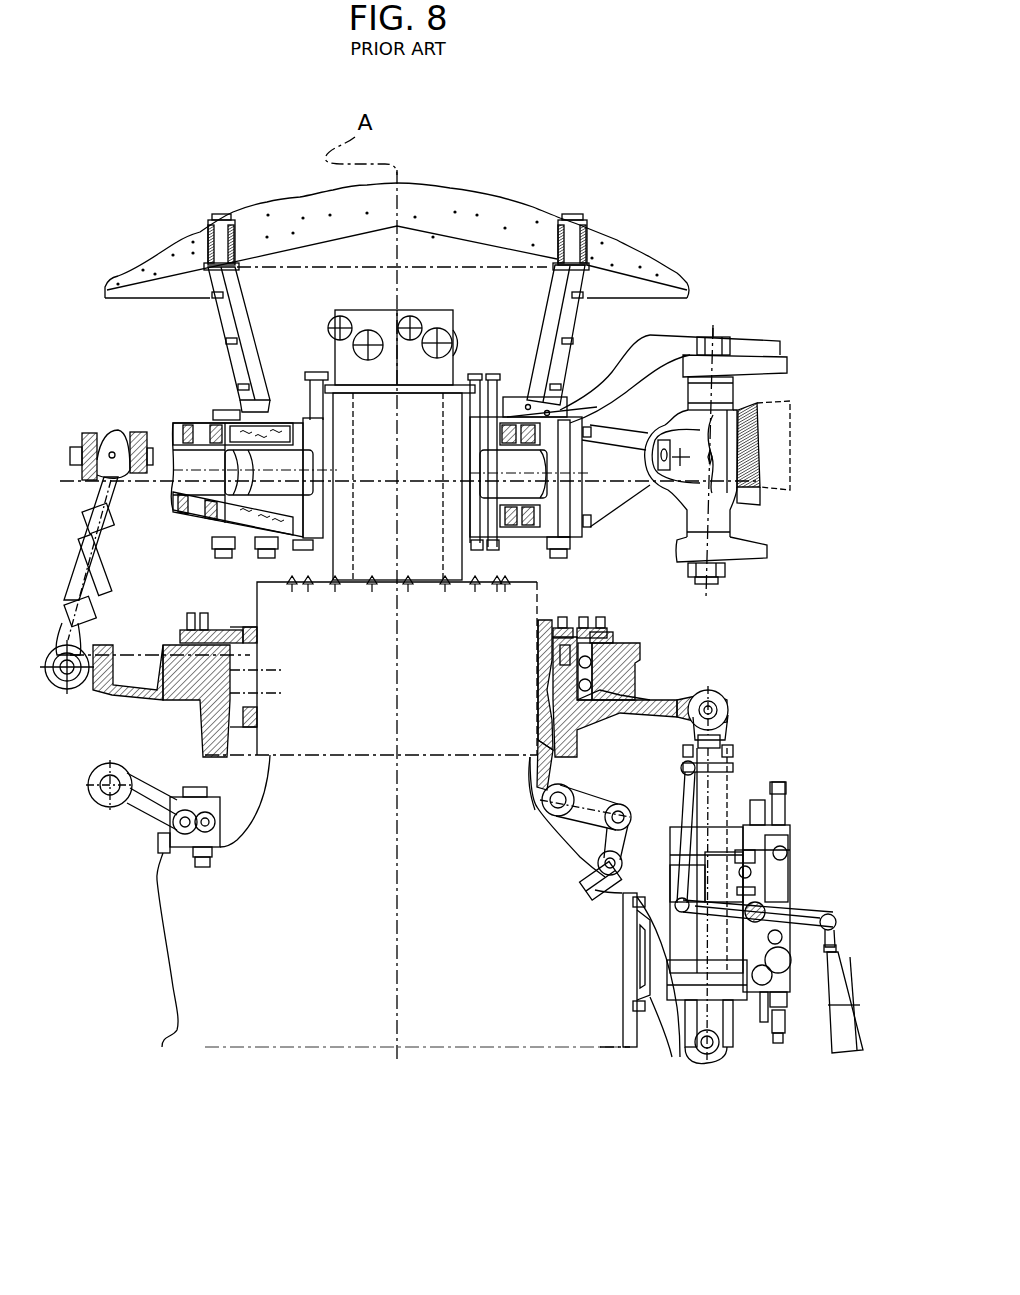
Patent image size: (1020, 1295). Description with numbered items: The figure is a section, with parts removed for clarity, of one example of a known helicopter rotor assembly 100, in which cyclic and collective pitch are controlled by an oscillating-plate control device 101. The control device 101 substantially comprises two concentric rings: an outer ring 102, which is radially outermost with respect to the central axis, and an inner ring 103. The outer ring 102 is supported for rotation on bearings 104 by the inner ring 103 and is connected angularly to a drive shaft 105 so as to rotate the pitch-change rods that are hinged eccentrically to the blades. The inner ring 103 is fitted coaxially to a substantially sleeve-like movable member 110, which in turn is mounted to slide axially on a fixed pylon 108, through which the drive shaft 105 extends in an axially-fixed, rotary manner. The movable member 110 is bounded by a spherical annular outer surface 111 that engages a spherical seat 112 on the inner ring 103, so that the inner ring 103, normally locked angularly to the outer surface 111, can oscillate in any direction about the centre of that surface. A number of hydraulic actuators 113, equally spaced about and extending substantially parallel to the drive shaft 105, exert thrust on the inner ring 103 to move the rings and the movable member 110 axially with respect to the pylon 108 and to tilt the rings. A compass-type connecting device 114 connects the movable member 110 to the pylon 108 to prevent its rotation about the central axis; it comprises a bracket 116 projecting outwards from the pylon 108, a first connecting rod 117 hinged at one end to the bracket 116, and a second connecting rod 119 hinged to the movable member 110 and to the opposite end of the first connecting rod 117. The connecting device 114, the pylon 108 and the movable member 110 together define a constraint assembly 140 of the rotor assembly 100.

The helicopter rotor assembly 100 is at (274, 1082).
The oscillating-plate control device 101 is at (724, 637).
The outer ring 102 is at (100, 687).
The inner ring 103 is at (575, 658).
The bearings 104 is at (162, 650).
The drive shaft 105 is at (437, 403).
The pylon 108 is at (200, 917).
The movable member 110 is at (538, 689).
The spherical annular outer surface 111 is at (540, 657).
The spherical seat 112 is at (560, 710).
The hydraulic actuators 113 is at (765, 1068).
The compass-type connecting device 114 is at (548, 862).
The bracket 116 is at (595, 890).
The first connecting rod 117 is at (602, 858).
The second connecting rod 119 is at (595, 797).
The constraint assembly 140 is at (543, 963).